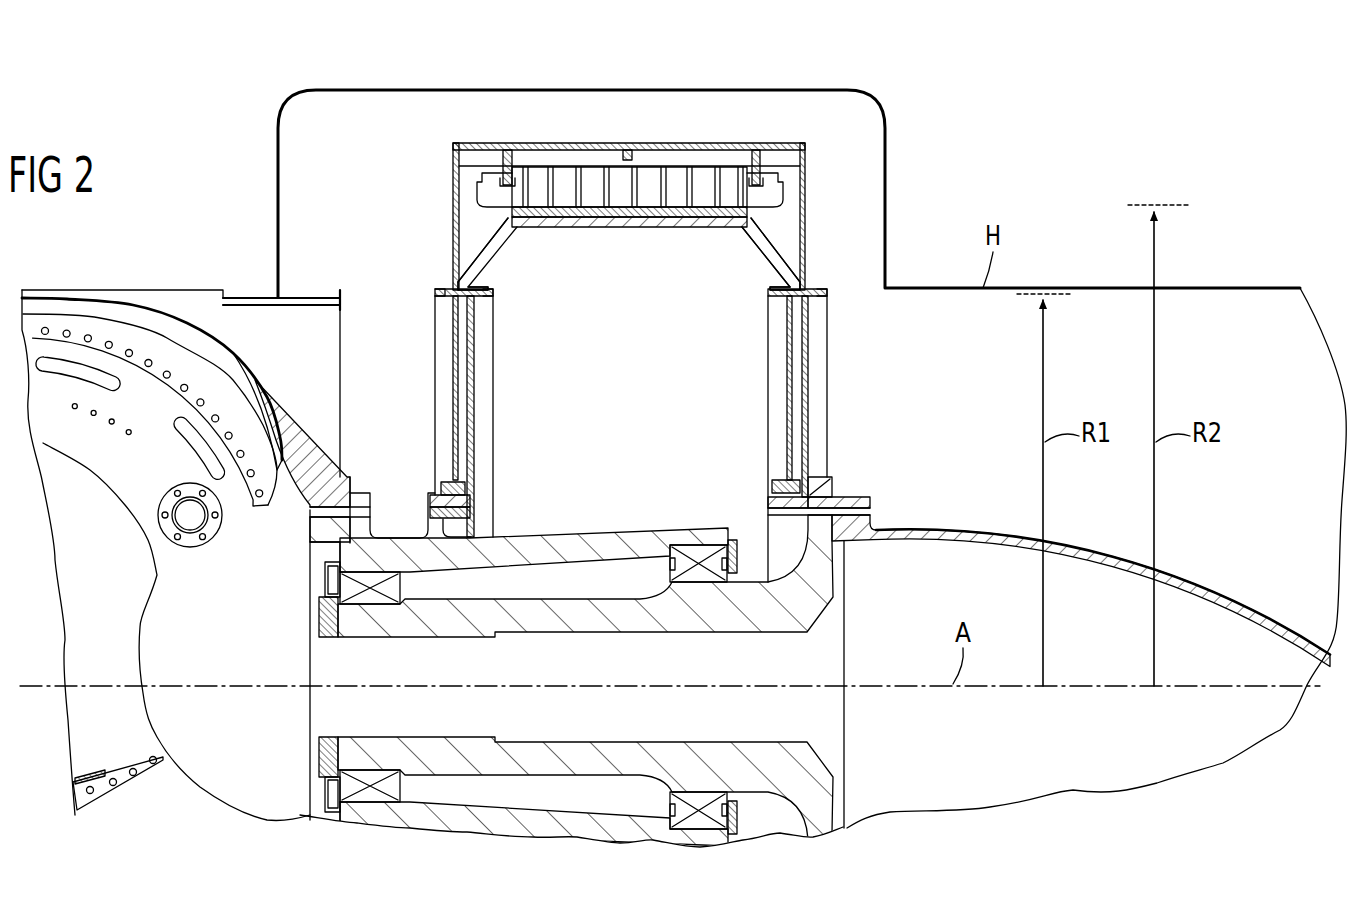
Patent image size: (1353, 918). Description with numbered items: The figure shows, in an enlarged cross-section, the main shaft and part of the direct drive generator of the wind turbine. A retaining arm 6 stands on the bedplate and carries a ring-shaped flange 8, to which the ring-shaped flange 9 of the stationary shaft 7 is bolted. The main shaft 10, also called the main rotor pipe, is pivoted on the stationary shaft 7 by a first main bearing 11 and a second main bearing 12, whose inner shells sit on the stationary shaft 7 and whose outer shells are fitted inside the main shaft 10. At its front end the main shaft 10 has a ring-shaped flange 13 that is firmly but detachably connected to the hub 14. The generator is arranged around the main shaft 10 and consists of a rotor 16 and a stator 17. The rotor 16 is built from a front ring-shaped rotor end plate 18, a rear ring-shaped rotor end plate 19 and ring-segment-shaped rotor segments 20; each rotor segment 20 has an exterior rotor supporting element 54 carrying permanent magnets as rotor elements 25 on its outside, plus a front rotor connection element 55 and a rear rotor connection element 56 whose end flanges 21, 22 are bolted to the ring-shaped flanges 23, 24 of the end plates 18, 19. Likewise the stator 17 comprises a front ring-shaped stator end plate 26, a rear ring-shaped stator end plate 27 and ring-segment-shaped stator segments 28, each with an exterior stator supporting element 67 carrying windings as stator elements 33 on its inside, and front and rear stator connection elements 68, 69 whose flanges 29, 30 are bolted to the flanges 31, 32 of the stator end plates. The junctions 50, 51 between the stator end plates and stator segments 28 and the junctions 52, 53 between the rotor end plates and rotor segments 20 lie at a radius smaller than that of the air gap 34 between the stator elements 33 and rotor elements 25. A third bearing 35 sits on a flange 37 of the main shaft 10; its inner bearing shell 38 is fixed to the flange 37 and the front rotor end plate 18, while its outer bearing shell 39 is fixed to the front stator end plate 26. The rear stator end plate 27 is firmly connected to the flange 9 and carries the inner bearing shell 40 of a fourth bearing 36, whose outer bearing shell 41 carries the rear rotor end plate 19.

The retaining arm 6 is at (950, 532).
The stationary shaft 7 is at (832, 580).
The flange 8 is at (860, 500).
The flange 9 is at (831, 482).
The main shaft 10 is at (605, 536).
The first main bearing 11 is at (322, 617).
The second main bearing 12 is at (680, 548).
The ring-shaped flange 13 is at (362, 490).
The hub 14 is at (158, 290).
The rotor 16 is at (668, 237).
The stator 17 is at (648, 122).
The front ring-shaped rotor end plate 18 is at (475, 422).
The rear ring-shaped rotor end plate 19 is at (787, 335).
The ring-segment-shaped rotor segment 20 is at (603, 228).
The ring-segment-shaped flange 21 is at (498, 293).
The ring-segment-shaped flange 22 is at (769, 276).
The ring-shaped flange 23 is at (488, 302).
The ring-shaped flange 24 is at (771, 303).
The rotor element 25 is at (547, 202).
The front ring-shaped stator end plate 26 is at (455, 402).
The rear ring-shaped stator end plate 27 is at (809, 412).
The ring-segment-shaped stator segment 28 is at (805, 167).
The ring-segment-shaped flange 29 is at (455, 284).
The ring-segment-shaped flange 30 is at (802, 284).
The ring-shaped flange 31 is at (446, 300).
The ring-shaped flange 32 is at (825, 303).
The stator element 33 is at (607, 172).
The air gap 34 is at (494, 214).
The third bearing 35 is at (462, 528).
The fourth bearing 36 is at (765, 492).
The flange 37 is at (441, 526).
The inner bearing shell 38 is at (472, 498).
The outer bearing shell 39 is at (446, 483).
The inner bearing shell 40 is at (768, 504).
The outer bearing shell 41 is at (780, 483).
The junction 50 is at (444, 297).
The junction 51 is at (825, 298).
The junction 52 is at (489, 298).
The junction 53 is at (770, 292).
The exterior ring-segment-shaped rotor supporting element 54 is at (636, 235).
The front ring-segment-shaped rotor connection element 55 is at (503, 262).
The rear ring-segment-shaped rotor connection element 56 is at (794, 247).
The exterior ring-segment-shaped stator supporting element 67 is at (507, 150).
The front ring-segment-shaped stator connection element 68 is at (453, 166).
The rear ring-segment-shaped stator connection element 69 is at (805, 203).